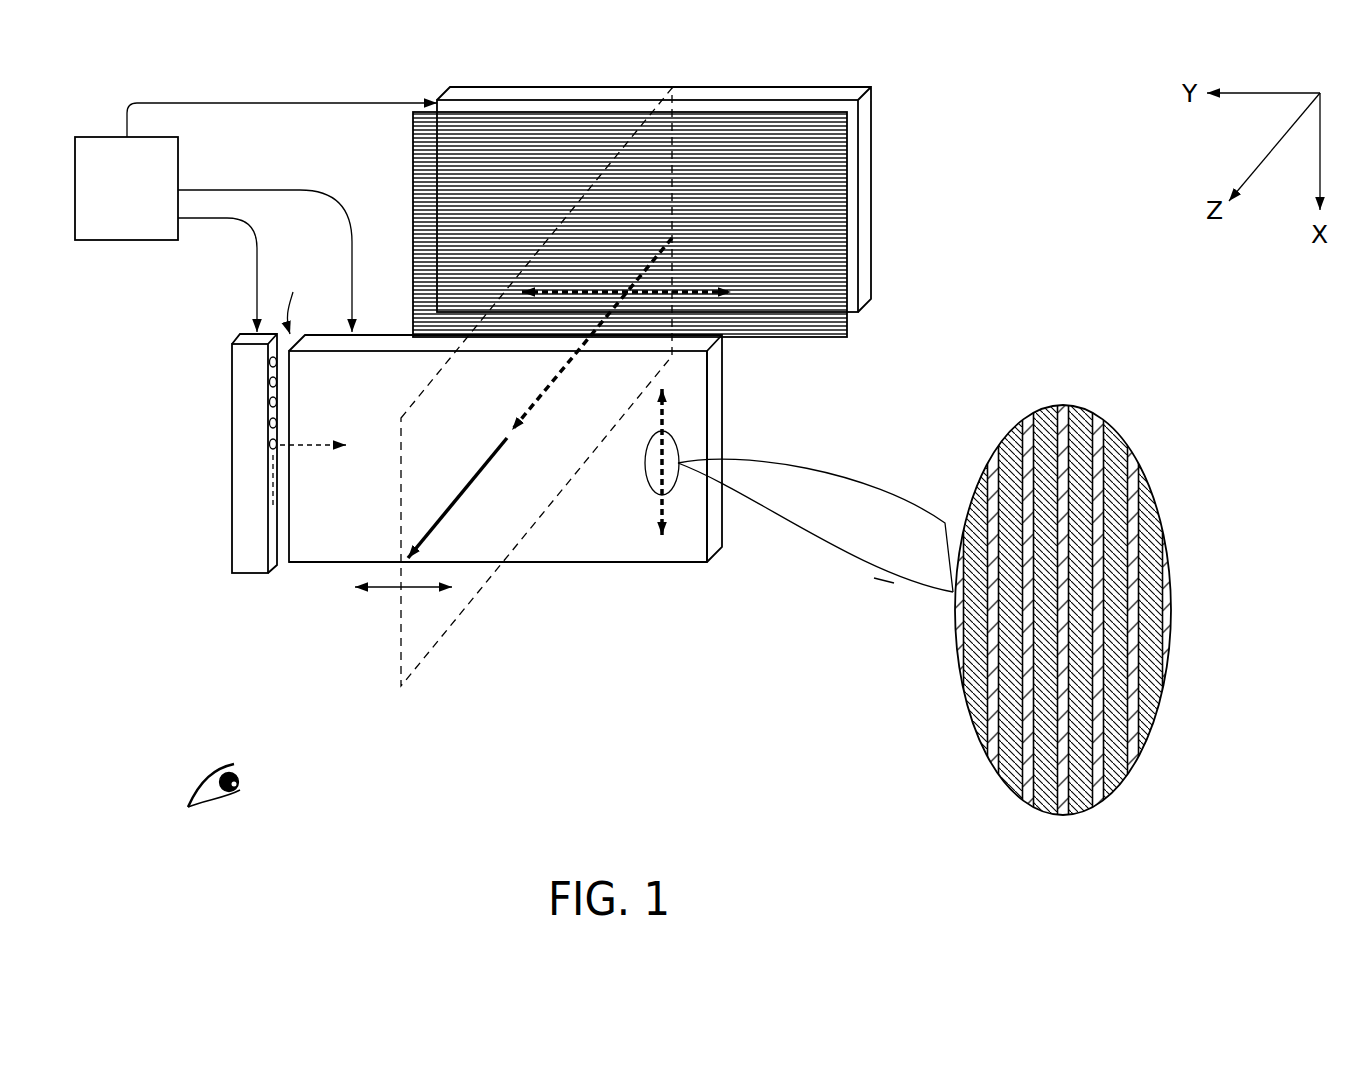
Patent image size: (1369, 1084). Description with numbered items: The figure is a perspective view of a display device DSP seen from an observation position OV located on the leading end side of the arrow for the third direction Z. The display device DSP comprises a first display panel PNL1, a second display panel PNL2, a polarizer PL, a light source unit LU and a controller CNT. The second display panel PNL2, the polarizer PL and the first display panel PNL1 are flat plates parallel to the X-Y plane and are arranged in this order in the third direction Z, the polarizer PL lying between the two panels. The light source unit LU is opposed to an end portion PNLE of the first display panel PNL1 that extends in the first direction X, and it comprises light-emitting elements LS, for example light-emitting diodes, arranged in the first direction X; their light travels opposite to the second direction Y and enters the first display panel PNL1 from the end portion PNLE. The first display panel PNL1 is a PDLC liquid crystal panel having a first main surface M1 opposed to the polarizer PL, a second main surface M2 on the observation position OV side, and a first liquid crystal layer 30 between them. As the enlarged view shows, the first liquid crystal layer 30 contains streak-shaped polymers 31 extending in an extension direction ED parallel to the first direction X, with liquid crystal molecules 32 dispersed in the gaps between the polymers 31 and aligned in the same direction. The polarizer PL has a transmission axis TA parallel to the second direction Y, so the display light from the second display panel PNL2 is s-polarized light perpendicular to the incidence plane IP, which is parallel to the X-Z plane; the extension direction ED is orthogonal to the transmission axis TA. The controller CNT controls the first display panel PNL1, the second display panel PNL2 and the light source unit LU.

The controller CNT is at (256, 217).
The second display panel PNL2 is at (871, 106).
The polarizer PL is at (848, 326).
The transmission axis TA is at (728, 300).
The first display panel PNL1 is at (723, 422).
The end portion PNLE is at (295, 300).
The light source unit LU is at (256, 576).
The light-emitting elements LS is at (277, 362).
The incidence plane IP is at (447, 642).
The extension direction ED is at (658, 510).
The first main surface M1 is at (729, 534).
The second main surface M2 is at (692, 545).
The display device DSP is at (189, 520).
The observation position OV is at (230, 816).
The first liquid crystal layer 30 is at (947, 646).
The polymers 31 is at (1007, 783).
The liquid crystal molecules 32 is at (1028, 795).